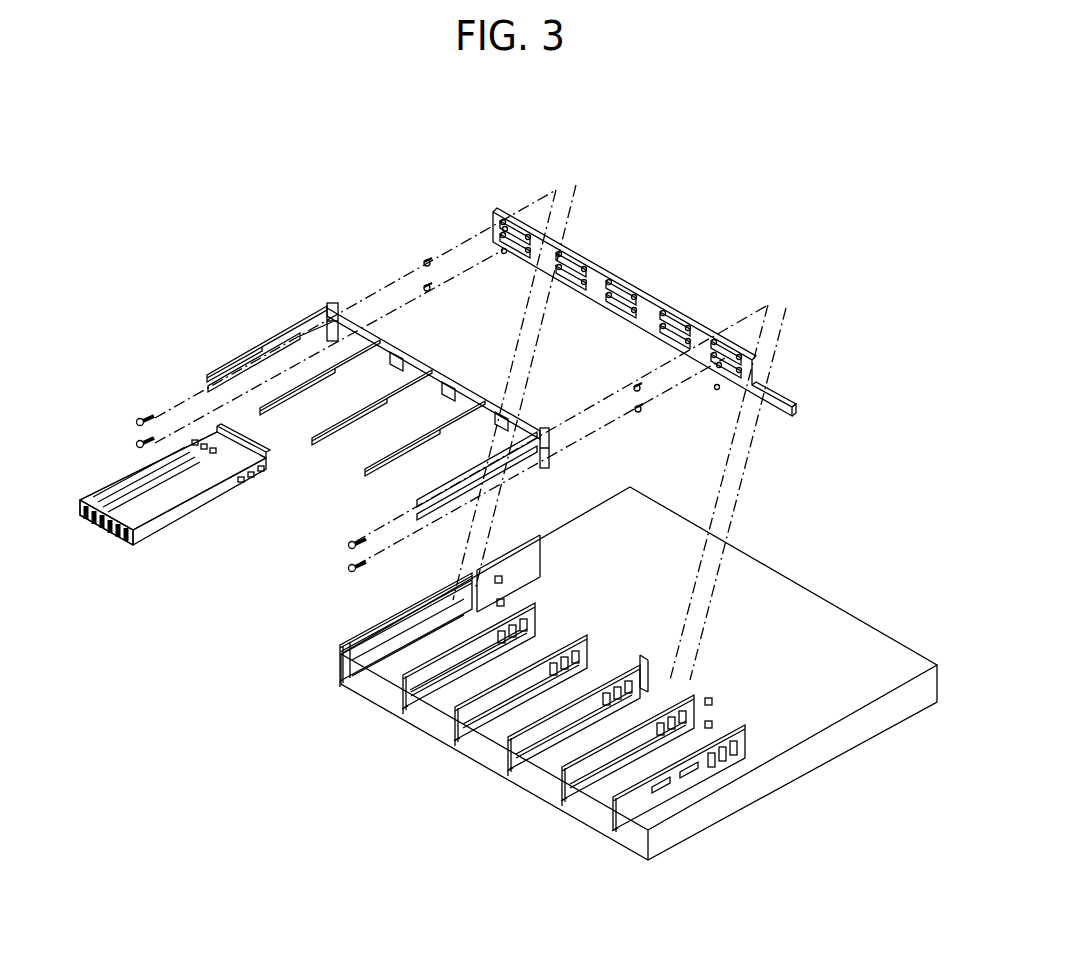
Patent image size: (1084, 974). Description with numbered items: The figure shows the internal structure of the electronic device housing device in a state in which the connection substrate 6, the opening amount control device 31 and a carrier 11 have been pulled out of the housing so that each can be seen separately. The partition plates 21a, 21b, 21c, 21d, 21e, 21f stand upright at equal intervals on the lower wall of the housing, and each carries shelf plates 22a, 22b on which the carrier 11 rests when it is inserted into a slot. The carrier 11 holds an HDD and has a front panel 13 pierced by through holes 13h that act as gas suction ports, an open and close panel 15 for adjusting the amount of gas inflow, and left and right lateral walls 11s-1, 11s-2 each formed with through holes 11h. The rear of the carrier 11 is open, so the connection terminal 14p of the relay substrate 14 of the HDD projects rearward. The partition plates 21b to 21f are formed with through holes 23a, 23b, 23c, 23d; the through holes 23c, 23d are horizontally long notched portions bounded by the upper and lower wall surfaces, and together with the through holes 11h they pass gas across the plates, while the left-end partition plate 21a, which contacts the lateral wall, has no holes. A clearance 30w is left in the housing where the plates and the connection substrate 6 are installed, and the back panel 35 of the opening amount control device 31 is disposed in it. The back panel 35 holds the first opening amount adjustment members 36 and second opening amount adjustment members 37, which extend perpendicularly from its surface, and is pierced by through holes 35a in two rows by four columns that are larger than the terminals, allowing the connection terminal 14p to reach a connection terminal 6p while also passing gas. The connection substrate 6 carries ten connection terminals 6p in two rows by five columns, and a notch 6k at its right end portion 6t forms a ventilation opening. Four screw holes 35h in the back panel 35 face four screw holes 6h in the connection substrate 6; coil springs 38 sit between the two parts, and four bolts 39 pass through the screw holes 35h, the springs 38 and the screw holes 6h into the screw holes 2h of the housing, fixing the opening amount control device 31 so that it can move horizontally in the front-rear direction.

The screw holes 2h is at (498, 576).
The connection substrate 6 is at (600, 283).
The screw holes 6h is at (493, 222).
The notch 6k is at (780, 400).
The connection terminals 6p is at (575, 262).
The end portion 6t is at (785, 414).
The carrier 11 is at (189, 472).
The through holes 11h is at (210, 446).
The left lateral wall 11s-1 is at (205, 432).
The right lateral wall 11s-2 is at (195, 505).
The front panel 13 is at (95, 517).
The through holes 13h is at (108, 536).
The relay substrate 14 is at (225, 432).
The connection terminal 14p is at (268, 460).
The open and close panel 15 is at (100, 497).
The partition plate 21a is at (360, 640).
The partition plate 21b is at (402, 690).
The partition plate 21c is at (585, 637).
The partition plate 21d is at (636, 668).
The partition plate 21e is at (565, 790).
The partition plate 21f is at (745, 735).
The shelf plate 22a is at (405, 705).
The shelf plate 22b is at (338, 676).
The through holes 23a is at (520, 632).
The through holes 23b is at (690, 780).
The through holes 23c is at (445, 662).
The through holes 23d is at (430, 620).
The clearance 30w is at (532, 600).
The opening amount control device 31 is at (390, 374).
The back panel 35 is at (392, 350).
The through holes 35a is at (432, 372).
The screw holes 35h is at (333, 303).
The first opening amount adjustment members 36 is at (240, 360).
The second opening amount adjustment members 37 is at (300, 336).
The coil springs 38 is at (425, 260).
The bolts 39 is at (137, 443).